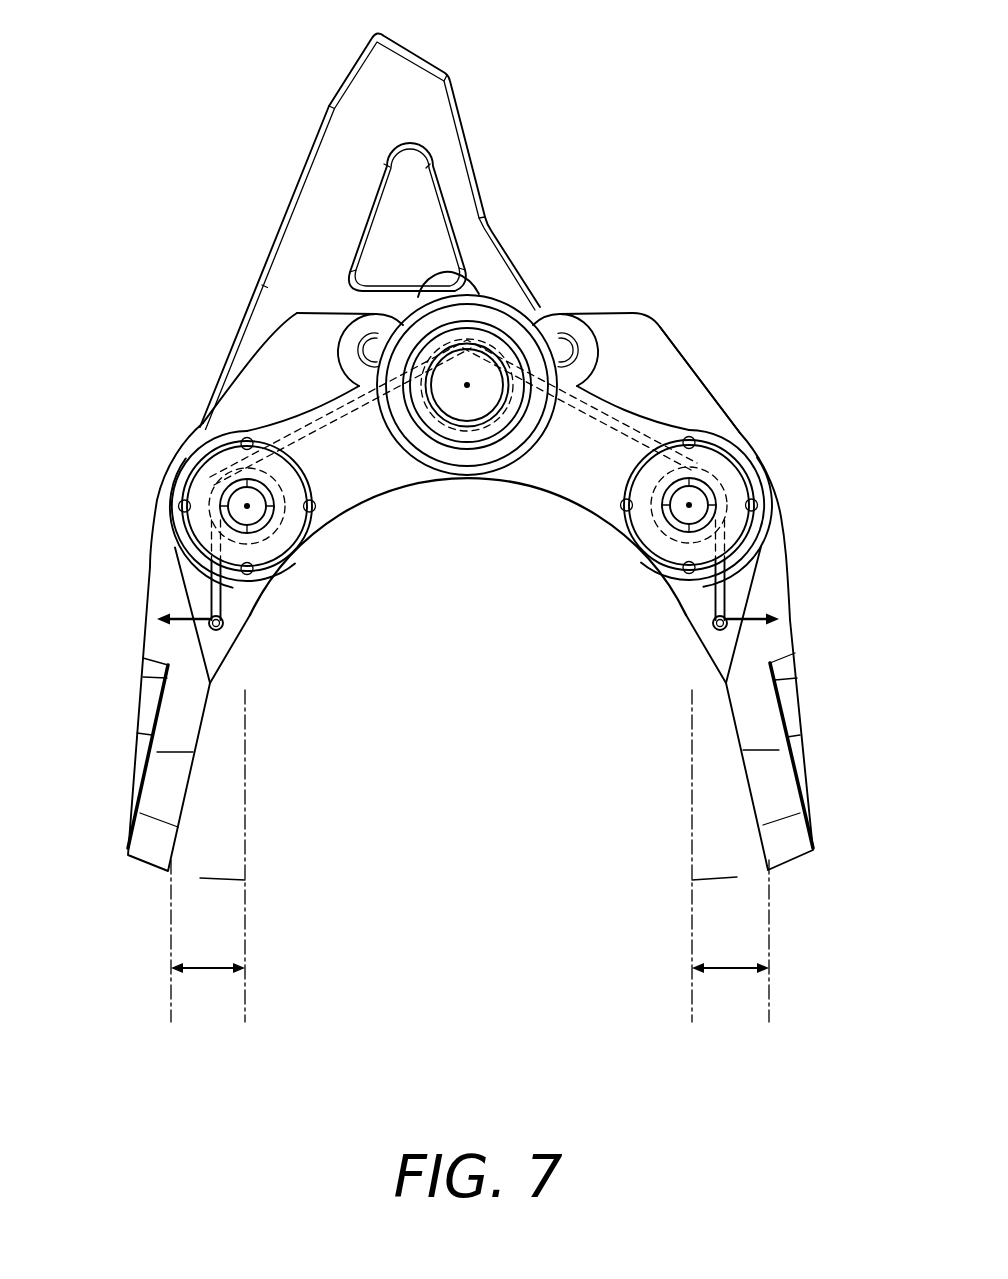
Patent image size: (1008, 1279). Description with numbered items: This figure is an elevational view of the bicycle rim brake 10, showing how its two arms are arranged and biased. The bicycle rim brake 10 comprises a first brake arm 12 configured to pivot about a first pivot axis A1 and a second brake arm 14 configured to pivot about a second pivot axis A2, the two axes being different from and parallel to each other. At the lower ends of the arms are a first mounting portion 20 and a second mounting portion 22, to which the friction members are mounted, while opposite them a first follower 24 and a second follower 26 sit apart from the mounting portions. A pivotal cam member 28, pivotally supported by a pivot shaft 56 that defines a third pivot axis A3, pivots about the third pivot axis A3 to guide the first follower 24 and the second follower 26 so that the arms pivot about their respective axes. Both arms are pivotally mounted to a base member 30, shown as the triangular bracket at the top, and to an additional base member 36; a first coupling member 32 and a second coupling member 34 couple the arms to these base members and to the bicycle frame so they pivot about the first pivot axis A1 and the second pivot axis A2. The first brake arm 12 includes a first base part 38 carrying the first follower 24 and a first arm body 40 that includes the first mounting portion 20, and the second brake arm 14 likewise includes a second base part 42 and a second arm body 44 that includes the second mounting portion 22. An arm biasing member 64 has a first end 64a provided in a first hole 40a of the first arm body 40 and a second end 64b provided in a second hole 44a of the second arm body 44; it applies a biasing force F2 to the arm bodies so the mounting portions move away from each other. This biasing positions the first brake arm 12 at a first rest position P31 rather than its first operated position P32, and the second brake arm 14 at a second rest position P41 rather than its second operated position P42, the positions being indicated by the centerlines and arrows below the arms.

The bicycle rim brake 10 is at (641, 152).
The first brake arm 12 is at (797, 560).
The second brake arm 14 is at (150, 548).
The first mounting portion 20 is at (788, 853).
The second mounting portion 22 is at (152, 848).
The first follower 24 is at (560, 313).
The second follower 26 is at (392, 312).
The pivotal cam member 28 is at (481, 278).
The base member 30 is at (312, 136).
The first coupling member 32 is at (655, 515).
The second coupling member 34 is at (282, 520).
The additional base member 36 is at (547, 492).
The first base part 38 is at (697, 398).
The first arm body 40 is at (796, 648).
The first hole 40a is at (713, 630).
The second base part 42 is at (241, 398).
The second arm body 44 is at (140, 648).
The second hole 44a is at (224, 630).
The pivot shaft 56 is at (467, 432).
The arm biasing member 64 is at (650, 428).
The first end 64a is at (713, 610).
The second end 64b is at (222, 610).
The first pivot axis A1 is at (689, 505).
The second pivot axis A2 is at (247, 506).
The third pivot axis A3 is at (467, 385).
The biasing force F2 is at (157, 619).
The first rest position P31 is at (171, 988).
The first operated position P32 is at (249, 988).
The second rest position P41 is at (770, 988).
The second operated position P42 is at (691, 988).